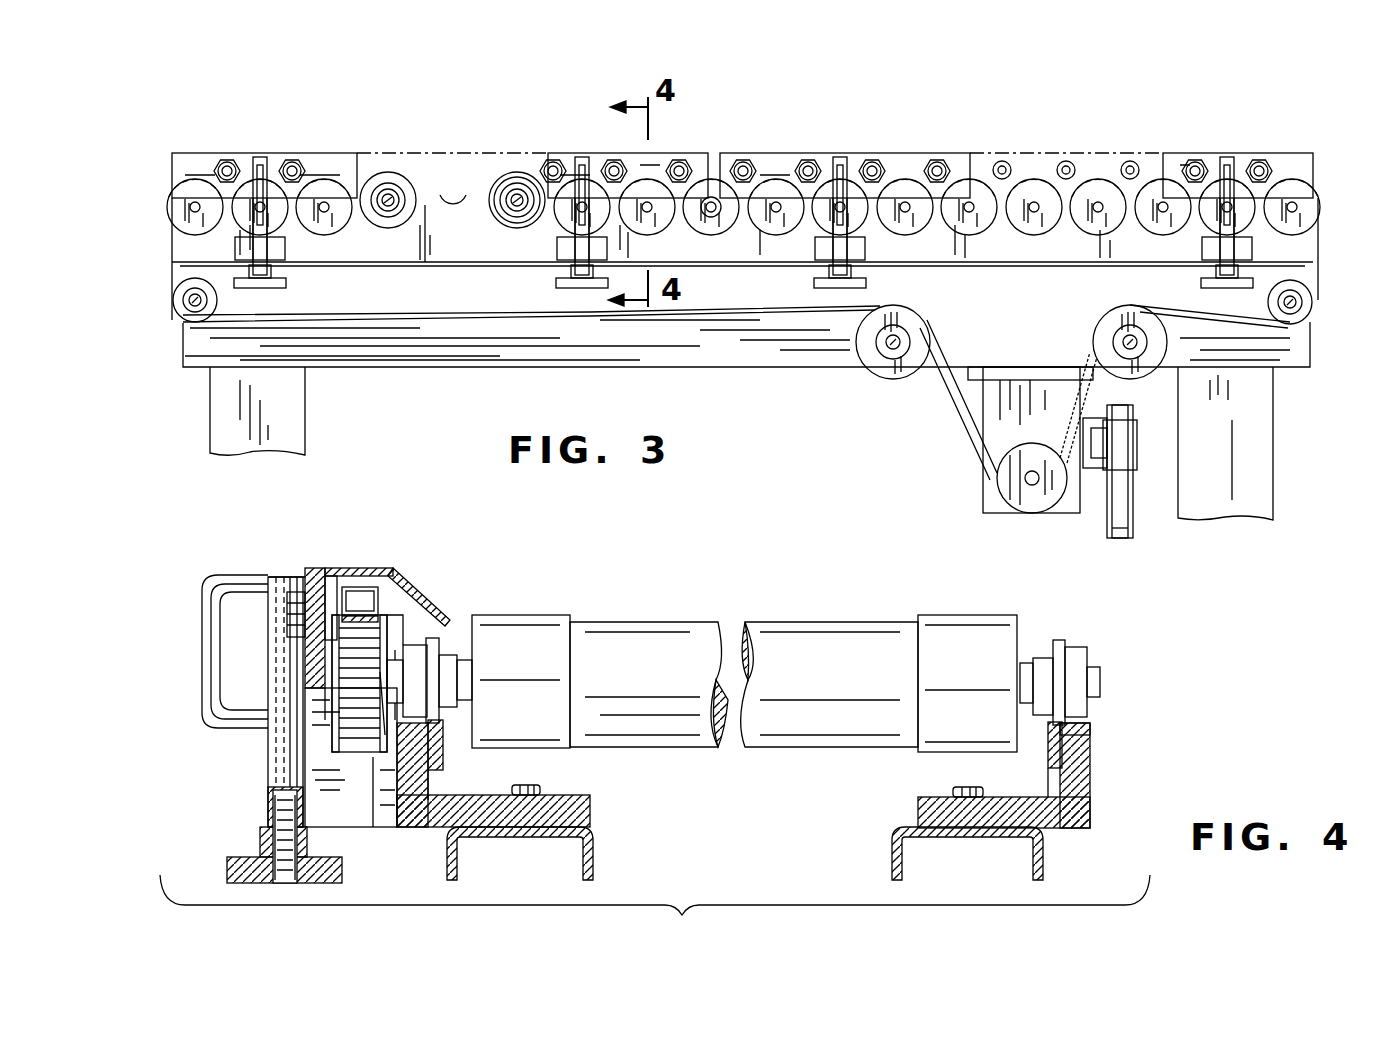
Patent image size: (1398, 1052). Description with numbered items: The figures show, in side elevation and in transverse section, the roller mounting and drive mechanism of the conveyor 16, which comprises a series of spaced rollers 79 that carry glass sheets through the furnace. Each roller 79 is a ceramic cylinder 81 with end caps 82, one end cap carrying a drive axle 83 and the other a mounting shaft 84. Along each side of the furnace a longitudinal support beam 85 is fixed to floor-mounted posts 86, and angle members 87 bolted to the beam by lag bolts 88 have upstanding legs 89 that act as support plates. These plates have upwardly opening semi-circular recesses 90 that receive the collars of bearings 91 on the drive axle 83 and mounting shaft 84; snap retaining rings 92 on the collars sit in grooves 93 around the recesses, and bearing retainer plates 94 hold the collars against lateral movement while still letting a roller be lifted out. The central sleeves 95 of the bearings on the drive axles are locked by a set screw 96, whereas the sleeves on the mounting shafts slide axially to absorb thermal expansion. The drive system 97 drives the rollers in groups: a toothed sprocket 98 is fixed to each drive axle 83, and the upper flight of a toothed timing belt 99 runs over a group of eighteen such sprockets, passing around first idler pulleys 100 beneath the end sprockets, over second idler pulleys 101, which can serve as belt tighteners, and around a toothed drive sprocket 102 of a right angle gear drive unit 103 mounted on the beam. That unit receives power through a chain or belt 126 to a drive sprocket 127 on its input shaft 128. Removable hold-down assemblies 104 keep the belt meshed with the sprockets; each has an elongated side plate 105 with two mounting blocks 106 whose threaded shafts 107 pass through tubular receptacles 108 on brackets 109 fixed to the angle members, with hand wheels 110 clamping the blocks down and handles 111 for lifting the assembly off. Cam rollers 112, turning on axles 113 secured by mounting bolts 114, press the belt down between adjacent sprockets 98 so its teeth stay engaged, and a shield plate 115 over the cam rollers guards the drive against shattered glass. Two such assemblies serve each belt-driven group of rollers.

In FIG. 3, the conveyor 16 is at (1300, 100).
In FIG. 4, the conveyor 16 is at (1172, 640).
In FIG. 3, the rollers 79 is at (400, 160).
In FIG. 4, the rollers 79 is at (990, 612).
In FIG. 4, the ceramic cylinder 81 is at (790, 625).
In FIG. 4, the end caps 82 is at (545, 618).
In FIG. 3, the drive axle 83 is at (388, 172).
In FIG. 4, the drive axle 83 is at (410, 660).
In FIG. 4, the mounting shaft 84 is at (1102, 680).
In FIG. 3, the longitudinal support beam 85 is at (393, 367).
In FIG. 4, the longitudinal support beam 85 is at (595, 860).
In FIG. 3, the posts 86 is at (212, 402).
In FIG. 4, the angle members 87 is at (590, 812).
In FIG. 4, the lag bolts 88 is at (540, 790).
In FIG. 3, the upstanding legs 89 is at (447, 258).
In FIG. 4, the upstanding legs 89 is at (400, 805).
In FIG. 3, the semi-circular recesses 90 is at (450, 190).
In FIG. 4, the semi-circular recesses 90 is at (1090, 716).
In FIG. 3, the bearings 91 is at (510, 185).
In FIG. 4, the bearings 91 is at (445, 678).
In FIG. 3, the snap retaining rings 92 is at (522, 175).
In FIG. 4, the snap retaining rings 92 is at (425, 645).
In FIG. 3, the retaining ring grooves 93 is at (430, 235).
In FIG. 4, the retaining ring grooves 93 is at (1072, 725).
In FIG. 4, the bearing retainer plates 94 is at (430, 790).
In FIG. 4, the central sleeves 95 is at (448, 708).
In FIG. 4, the set screw 96 is at (452, 660).
In FIG. 3, the drive system 97 is at (945, 463).
In FIG. 3, the toothed sprocket 98 is at (180, 217).
In FIG. 4, the toothed sprocket 98 is at (335, 740).
In FIG. 3, the timing belt 99 is at (955, 405).
In FIG. 4, the timing belt 99 is at (395, 660).
In FIG. 3, the first idler pulleys 100 is at (178, 312).
In FIG. 3, the second idler pulleys 101 is at (880, 365).
In FIG. 3, the toothed drive sprocket 102 is at (1020, 500).
In FIG. 3, the right angle gear drive unit 103 is at (990, 500).
In FIG. 3, the hold-down assemblies 104 is at (668, 150).
In FIG. 4, the hold-down assemblies 104 is at (265, 572).
In FIG. 3, the side plate 105 is at (770, 205).
In FIG. 4, the side plate 105 is at (305, 575).
In FIG. 3, the mounting blocks 106 is at (270, 165).
In FIG. 4, the mounting blocks 106 is at (272, 690).
In FIG. 4, the threaded shafts 107 is at (275, 800).
In FIG. 3, the tubular receptacles 108 is at (290, 248).
In FIG. 4, the tubular receptacles 108 is at (268, 750).
In FIG. 3, the brackets 109 is at (235, 250).
In FIG. 4, the brackets 109 is at (358, 827).
In FIG. 3, the hand wheels 110 is at (278, 285).
In FIG. 4, the hand wheels 110 is at (228, 862).
In FIG. 3, the handles 111 is at (258, 158).
In FIG. 4, the handles 111 is at (205, 650).
In FIG. 3, the cam rollers 112 is at (745, 172).
In FIG. 4, the cam rollers 112 is at (368, 600).
In FIG. 4, the axles 113 is at (330, 600).
In FIG. 4, the mounting bolts 114 is at (290, 607).
In FIG. 4, the shield plate 115 is at (445, 615).
In FIG. 3, the drive chains or belts 126 is at (1130, 528).
In FIG. 3, the drive sprockets 127 is at (1140, 474).
In FIG. 3, the input shafts 128 is at (1148, 440).